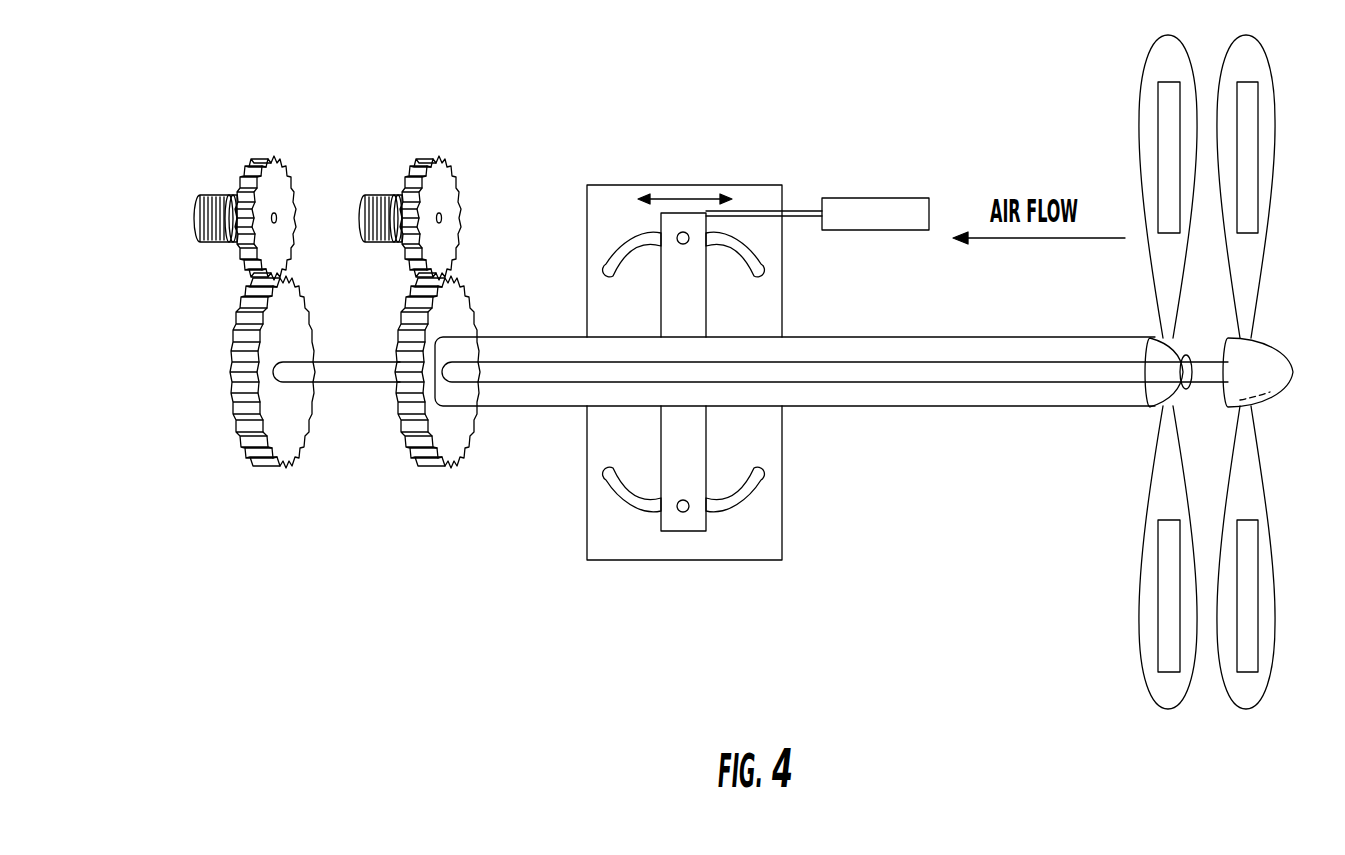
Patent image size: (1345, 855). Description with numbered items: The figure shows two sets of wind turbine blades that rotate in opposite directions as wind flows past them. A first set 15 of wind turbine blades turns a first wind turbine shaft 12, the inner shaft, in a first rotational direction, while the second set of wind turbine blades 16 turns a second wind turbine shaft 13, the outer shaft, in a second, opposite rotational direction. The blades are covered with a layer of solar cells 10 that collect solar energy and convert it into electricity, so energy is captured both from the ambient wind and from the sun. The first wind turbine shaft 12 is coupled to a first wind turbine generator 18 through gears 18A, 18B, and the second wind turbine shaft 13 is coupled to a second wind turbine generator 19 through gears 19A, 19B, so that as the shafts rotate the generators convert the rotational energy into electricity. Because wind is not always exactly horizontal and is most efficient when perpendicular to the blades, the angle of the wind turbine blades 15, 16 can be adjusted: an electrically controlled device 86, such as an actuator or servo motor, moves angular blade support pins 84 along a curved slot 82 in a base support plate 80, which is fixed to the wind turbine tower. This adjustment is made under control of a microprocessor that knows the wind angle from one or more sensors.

The solar cells 10 is at (1158, 150).
The first wind turbine shaft 12 is at (1000, 382).
The second wind turbine shaft 13 is at (890, 406).
The first set of wind turbine blades 15 is at (1220, 548).
The second set of wind turbine blades 16 is at (1140, 612).
The first wind turbine generator 18 is at (220, 193).
The gear 18A is at (258, 158).
The gear 18B is at (283, 433).
The second wind turbine generator 19 is at (385, 193).
The gear 19A is at (423, 158).
The gear 19B is at (448, 433).
The base support plate 80 is at (622, 185).
The curved slot 82 is at (601, 271).
The angular blade support pins 84 is at (677, 236).
The electrically controlled device 86 is at (873, 198).